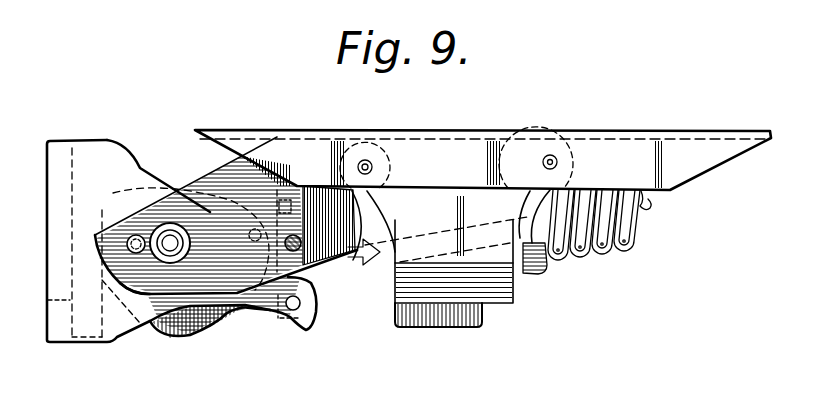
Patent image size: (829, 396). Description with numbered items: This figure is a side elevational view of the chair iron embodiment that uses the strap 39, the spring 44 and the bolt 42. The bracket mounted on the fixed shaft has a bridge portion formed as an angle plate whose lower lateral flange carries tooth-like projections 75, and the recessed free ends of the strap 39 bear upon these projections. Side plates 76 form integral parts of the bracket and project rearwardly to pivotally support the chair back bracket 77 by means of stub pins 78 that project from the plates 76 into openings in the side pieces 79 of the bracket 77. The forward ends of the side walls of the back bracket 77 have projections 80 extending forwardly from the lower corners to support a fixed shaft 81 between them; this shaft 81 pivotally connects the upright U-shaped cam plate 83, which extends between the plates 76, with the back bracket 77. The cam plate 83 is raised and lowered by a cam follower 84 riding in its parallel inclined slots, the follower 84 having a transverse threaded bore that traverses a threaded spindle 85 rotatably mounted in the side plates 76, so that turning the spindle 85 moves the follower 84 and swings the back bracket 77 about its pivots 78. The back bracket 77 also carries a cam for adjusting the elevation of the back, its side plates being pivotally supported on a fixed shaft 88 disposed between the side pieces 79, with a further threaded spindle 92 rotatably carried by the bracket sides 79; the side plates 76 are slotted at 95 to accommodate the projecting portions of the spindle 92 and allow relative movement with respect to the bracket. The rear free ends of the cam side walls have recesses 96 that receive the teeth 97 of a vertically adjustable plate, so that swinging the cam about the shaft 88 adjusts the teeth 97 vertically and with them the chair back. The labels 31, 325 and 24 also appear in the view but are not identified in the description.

The mounting bar 31 is at (343, 129).
The chair back bracket 77 is at (127, 136).
The teeth 97 is at (72, 313).
The side plates 76 is at (213, 178).
The threaded spindle 92 is at (165, 240).
The slots 95 is at (170, 222).
The stub pins 78 is at (128, 240).
The fixed shaft 88 is at (257, 230).
The tooth-like projections 75 is at (360, 257).
The strap 39 is at (540, 286).
The hub 325 is at (446, 249).
The base 24 is at (457, 326).
The spring 44 is at (591, 257).
The bolt 42 is at (650, 208).
The threaded spindle 85 is at (305, 252).
The cam follower 84 is at (313, 282).
The projections 80 is at (305, 328).
The fixed shaft 81 is at (302, 303).
The cam plate 83 is at (274, 320).
The side pieces 79 is at (170, 338).
The recesses 96 is at (150, 295).